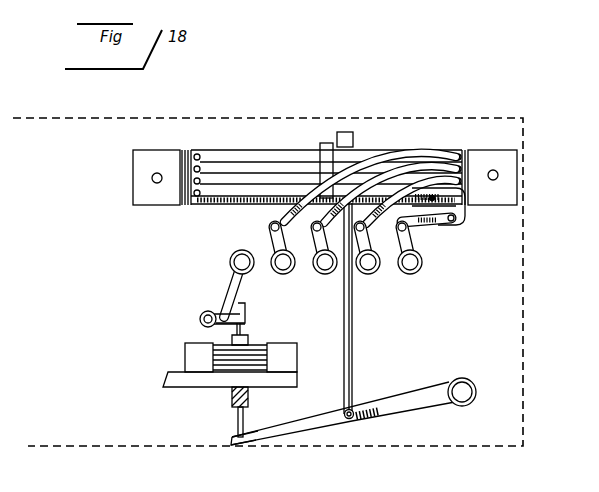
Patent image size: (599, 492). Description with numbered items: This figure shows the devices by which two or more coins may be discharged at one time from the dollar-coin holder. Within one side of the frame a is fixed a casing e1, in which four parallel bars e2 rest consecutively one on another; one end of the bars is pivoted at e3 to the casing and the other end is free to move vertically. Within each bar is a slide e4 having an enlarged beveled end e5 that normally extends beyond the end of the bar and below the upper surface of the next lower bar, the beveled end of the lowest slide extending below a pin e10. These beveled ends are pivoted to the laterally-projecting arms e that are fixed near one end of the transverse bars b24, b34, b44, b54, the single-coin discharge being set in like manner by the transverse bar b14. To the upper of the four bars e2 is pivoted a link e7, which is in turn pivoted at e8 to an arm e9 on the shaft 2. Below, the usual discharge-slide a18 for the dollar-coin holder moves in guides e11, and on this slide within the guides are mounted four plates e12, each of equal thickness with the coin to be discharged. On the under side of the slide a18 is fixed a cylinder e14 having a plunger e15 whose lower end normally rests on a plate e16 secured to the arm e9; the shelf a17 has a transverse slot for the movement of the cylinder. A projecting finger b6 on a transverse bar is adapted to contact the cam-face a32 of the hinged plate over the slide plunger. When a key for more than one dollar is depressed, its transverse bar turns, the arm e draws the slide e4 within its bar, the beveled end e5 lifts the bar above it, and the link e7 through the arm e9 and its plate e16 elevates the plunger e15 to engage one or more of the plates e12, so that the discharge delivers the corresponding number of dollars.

The frame a is at (500, 118).
The casing e1 is at (173, 190).
The parallel bars e2 is at (263, 170).
The pivot e3 is at (197, 168).
The slide e4 is at (466, 128).
The beveled end e5 is at (410, 192).
The laterally-projecting arms e is at (278, 238).
The link e7 is at (353, 347).
The pivot e8 is at (355, 409).
The arm e9 is at (408, 405).
The pin e10 is at (433, 200).
The guides e11 is at (186, 355).
The plates e12 is at (265, 348).
The cylinder e14 is at (234, 393).
The plunger e15 is at (239, 421).
The plate e16 is at (247, 440).
The shelf a17 is at (184, 383).
The discharging-slide a18 is at (262, 368).
The cam-face a32 is at (220, 314).
The arm or projecting finger b6 is at (236, 293).
The transverse bar b14 is at (229, 252).
The transverse bar b24 is at (281, 276).
The transverse bar b34 is at (324, 276).
The transverse bar b44 is at (367, 276).
The transverse bar b54 is at (411, 276).
The shaft 2 is at (466, 389).